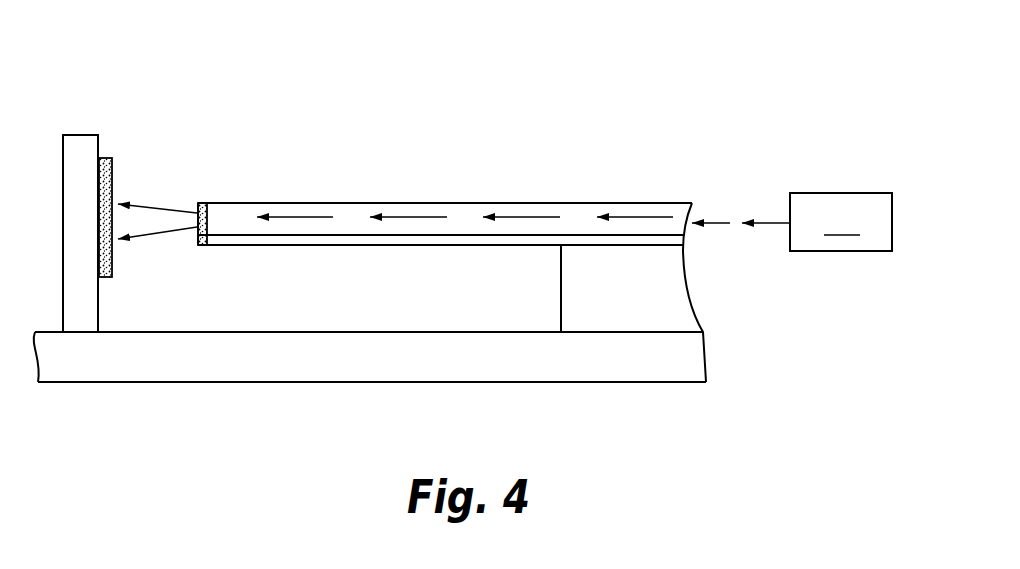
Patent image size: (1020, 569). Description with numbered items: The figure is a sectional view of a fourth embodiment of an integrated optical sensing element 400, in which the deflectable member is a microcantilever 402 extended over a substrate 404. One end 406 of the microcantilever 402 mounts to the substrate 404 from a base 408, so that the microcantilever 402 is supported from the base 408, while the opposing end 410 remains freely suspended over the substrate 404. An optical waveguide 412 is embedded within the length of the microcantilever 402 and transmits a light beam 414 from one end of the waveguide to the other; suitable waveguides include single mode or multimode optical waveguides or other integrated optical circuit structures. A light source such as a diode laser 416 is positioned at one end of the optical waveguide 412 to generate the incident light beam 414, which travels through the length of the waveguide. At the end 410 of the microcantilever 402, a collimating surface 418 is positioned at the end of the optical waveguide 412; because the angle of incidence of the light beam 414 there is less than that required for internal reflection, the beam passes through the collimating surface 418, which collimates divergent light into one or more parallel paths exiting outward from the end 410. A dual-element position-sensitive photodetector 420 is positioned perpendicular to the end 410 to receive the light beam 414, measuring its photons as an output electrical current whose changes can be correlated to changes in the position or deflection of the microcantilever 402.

The integrated optical sensing element 400 is at (625, 90).
The microcantilever 402 is at (454, 203).
The substrate 404 is at (642, 367).
The end of microcantilever 406 is at (668, 185).
The base 408 is at (645, 300).
The opposing end of microcantilever 410 is at (220, 192).
The optical waveguide 412 is at (413, 237).
The light beam 414 is at (137, 167).
The diode laser 416 is at (841, 222).
The collimating surface 418 is at (203, 203).
The dual-element position-sensitive photodetector 420 is at (105, 157).